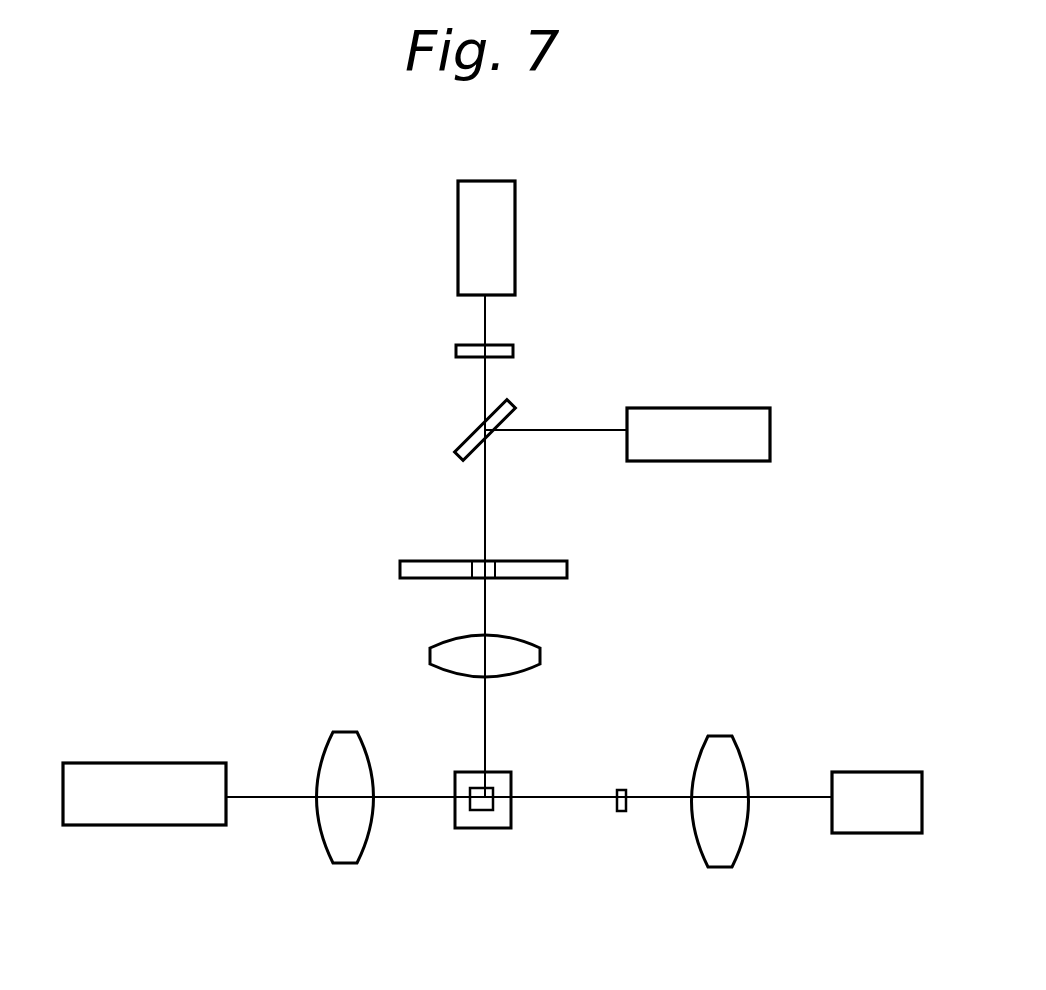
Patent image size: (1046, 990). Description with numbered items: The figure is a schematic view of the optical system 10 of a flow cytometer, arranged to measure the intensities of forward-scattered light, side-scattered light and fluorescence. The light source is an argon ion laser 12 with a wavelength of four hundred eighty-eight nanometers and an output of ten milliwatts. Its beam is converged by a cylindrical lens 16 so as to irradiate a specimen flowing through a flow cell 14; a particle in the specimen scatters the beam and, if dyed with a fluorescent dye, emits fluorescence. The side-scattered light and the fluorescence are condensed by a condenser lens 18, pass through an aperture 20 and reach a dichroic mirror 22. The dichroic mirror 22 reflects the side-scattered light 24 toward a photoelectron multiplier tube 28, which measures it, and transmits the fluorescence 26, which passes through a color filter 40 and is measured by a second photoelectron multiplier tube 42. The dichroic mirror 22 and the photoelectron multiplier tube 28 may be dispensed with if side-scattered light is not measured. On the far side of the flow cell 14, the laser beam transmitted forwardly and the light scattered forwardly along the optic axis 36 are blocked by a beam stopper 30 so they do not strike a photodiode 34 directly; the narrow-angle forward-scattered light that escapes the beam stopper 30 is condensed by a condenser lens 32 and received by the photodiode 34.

The optical system 10 is at (810, 698).
The argon ion laser 12 is at (151, 827).
The flow cell 14 is at (486, 830).
The cylindrical lens 16 is at (341, 865).
The condenser lens 18 is at (430, 655).
The aperture 20 is at (411, 561).
The dichroic mirror 22 is at (458, 450).
The side-scattered light 24 is at (569, 430).
The fluorescence 26 is at (485, 391).
The photoelectron multiplier tube 28 is at (718, 408).
The beam stopper 30 is at (619, 812).
The condenser lens 32 is at (721, 869).
The photodiode 34 is at (889, 835).
The optic axis 36 is at (556, 797).
The color filter 40 is at (456, 350).
The photoelectron multiplier tube 42 is at (458, 215).